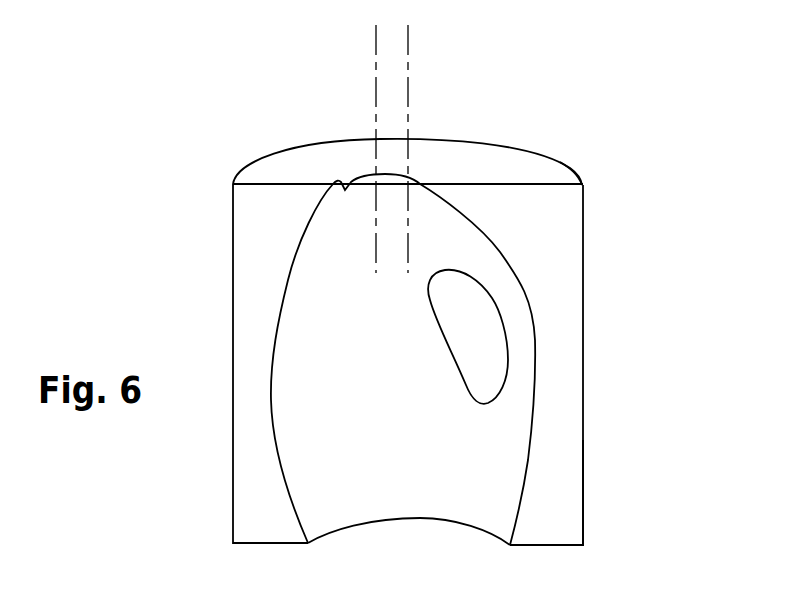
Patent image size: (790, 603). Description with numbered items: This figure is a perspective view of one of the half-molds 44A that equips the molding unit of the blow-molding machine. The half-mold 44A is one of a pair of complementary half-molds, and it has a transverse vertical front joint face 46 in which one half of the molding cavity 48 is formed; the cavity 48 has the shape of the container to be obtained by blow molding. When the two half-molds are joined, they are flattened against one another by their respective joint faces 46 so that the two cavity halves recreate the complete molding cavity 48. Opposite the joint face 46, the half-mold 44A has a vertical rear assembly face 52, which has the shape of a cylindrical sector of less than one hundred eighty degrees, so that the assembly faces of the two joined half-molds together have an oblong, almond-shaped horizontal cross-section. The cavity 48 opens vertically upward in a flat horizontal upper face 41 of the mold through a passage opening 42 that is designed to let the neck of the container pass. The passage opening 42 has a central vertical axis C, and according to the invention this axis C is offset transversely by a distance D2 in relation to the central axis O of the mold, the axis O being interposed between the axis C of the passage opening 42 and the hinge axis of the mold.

The flat horizontal upper face 41 is at (493, 165).
The passage opening 42 is at (345, 190).
The vertical rear assembly face 52 is at (573, 166).
The molding cavity 48 is at (288, 281).
The half-mold 44A is at (598, 358).
The transverse vertical front joint face 46 is at (557, 475).
The central vertical axis of the passage opening C is at (376, 53).
The central axis of the mold O is at (408, 57).
The offset distance D2 is at (408, 268).